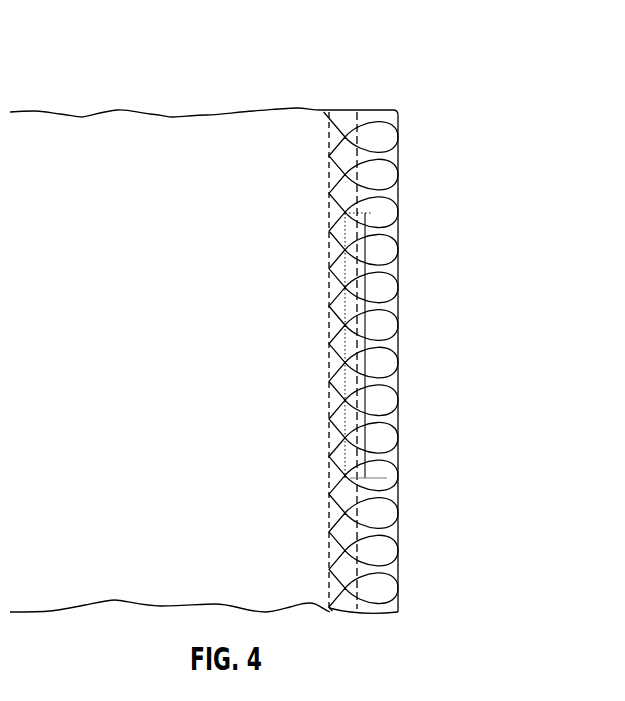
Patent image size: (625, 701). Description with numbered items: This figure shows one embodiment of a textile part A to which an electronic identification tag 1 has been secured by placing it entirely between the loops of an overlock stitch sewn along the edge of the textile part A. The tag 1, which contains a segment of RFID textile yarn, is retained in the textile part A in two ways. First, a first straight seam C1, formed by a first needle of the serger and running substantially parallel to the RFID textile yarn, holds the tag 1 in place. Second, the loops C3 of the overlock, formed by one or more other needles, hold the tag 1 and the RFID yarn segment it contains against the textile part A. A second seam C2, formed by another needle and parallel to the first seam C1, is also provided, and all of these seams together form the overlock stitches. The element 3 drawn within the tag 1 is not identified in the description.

The textile part A is at (146, 110).
The second seam C2 is at (327, 105).
The first straight seam C1 is at (359, 105).
The loops of the overlock C3 is at (408, 134).
The electronic identification tag 1 is at (410, 228).
The core wire / inner element 3 is at (380, 306).